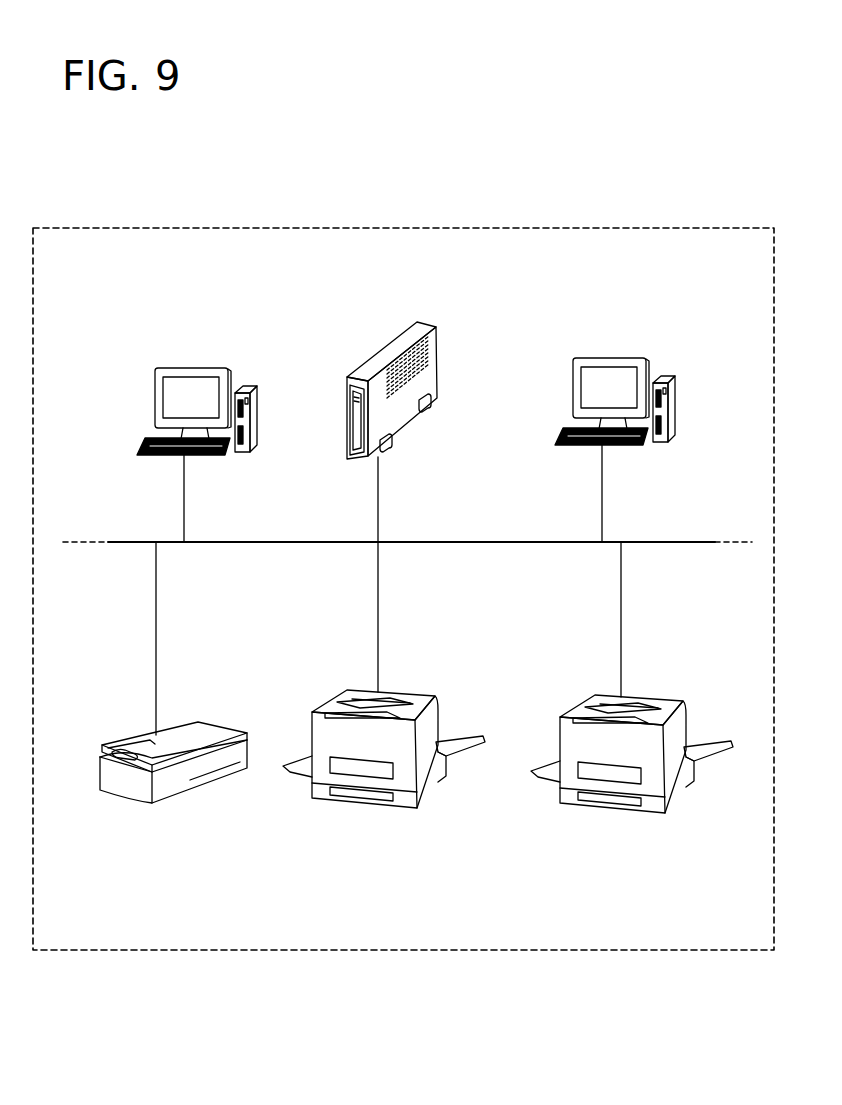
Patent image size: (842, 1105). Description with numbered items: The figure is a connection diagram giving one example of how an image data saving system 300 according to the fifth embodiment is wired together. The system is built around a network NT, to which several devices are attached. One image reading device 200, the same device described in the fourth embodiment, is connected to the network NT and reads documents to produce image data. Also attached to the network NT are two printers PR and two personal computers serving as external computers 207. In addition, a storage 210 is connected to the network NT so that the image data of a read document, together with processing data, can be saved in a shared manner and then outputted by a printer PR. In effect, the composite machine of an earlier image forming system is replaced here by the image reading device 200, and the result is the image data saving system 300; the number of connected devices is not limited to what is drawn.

The image data saving system 300 is at (148, 228).
The network NT is at (118, 515).
The external computer 207 is at (187, 368).
The storage 210 is at (418, 325).
The image reading device 200 is at (182, 780).
The printer PR is at (411, 808).